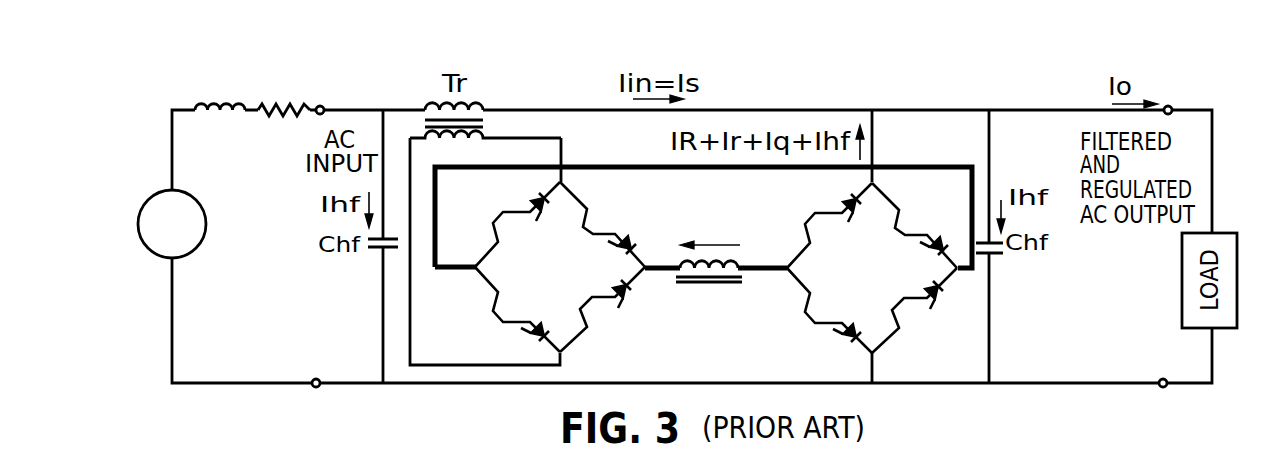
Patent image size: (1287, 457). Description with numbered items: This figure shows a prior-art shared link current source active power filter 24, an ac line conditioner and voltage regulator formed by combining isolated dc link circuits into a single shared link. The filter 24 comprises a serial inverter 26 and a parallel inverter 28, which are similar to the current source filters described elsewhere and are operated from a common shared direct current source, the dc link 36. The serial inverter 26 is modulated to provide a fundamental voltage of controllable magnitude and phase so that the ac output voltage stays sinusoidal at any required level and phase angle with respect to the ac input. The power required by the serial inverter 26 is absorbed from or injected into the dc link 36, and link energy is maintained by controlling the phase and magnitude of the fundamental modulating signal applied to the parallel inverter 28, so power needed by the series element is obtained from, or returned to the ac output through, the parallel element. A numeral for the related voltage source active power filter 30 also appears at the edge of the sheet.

The shared link current source active power filter 24 is at (195, 63).
The serial inverter 26 is at (597, 330).
The parallel inverter 28 is at (903, 340).
The shared link voltage source active power filter 30 is at (152, 455).
The dc link 36 is at (721, 212).